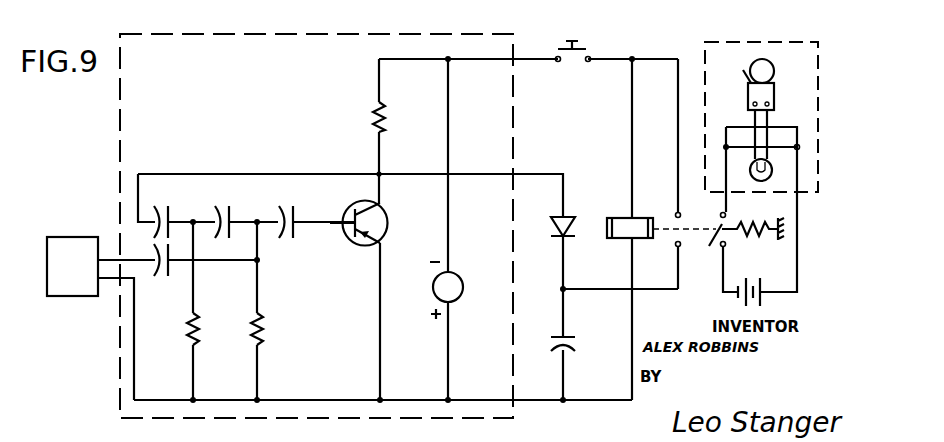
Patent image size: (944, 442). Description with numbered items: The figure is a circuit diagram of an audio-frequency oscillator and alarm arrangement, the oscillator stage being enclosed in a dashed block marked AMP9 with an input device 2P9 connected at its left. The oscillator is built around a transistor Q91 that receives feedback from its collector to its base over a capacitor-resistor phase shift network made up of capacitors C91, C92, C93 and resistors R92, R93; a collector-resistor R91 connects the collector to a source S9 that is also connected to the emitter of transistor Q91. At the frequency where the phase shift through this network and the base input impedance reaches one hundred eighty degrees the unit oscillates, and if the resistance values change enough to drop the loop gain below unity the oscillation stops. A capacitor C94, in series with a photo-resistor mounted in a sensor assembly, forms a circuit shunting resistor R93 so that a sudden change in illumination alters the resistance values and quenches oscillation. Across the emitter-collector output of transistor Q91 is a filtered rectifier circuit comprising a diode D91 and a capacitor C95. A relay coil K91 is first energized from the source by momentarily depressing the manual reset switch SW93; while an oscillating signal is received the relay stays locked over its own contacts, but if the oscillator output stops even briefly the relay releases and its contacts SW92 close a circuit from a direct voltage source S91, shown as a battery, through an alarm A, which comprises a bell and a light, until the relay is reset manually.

The amplifier AMP9 is at (360, 34).
The pickup / input transducer 2P9 is at (70, 224).
The capacitor C91 is at (177, 198).
The capacitor C92 is at (239, 198).
The capacitor C93 is at (304, 198).
The capacitor C94 is at (168, 277).
The capacitor C95 is at (573, 337).
The collector-resistor R91 is at (384, 110).
The resistor R92 is at (197, 318).
The resistor R93 is at (261, 320).
The transistor Q91 is at (389, 223).
The source S9 is at (462, 282).
The diode D91 is at (568, 216).
The relay coil K91 is at (618, 246).
The manual reset switch SW93 is at (599, 42).
The contacts SW92 is at (726, 247).
The direct voltage source S91 is at (762, 305).
The alarm A is at (722, 42).